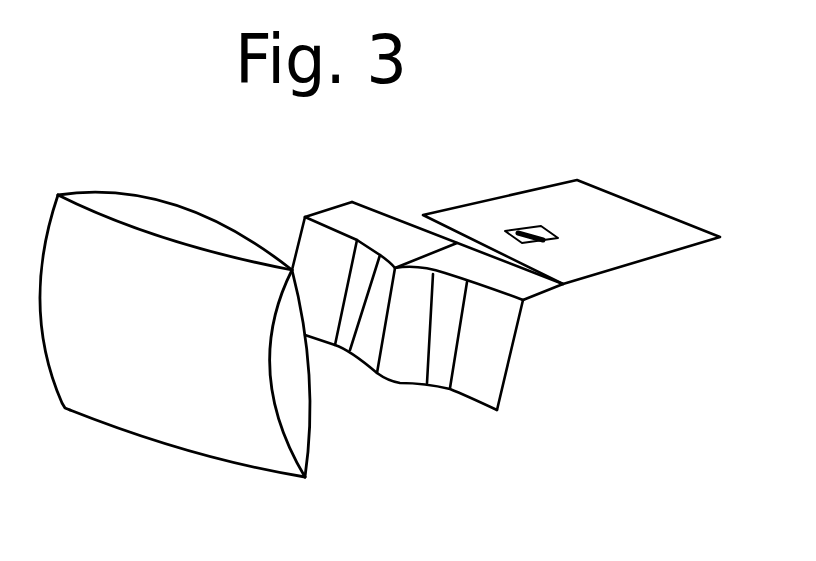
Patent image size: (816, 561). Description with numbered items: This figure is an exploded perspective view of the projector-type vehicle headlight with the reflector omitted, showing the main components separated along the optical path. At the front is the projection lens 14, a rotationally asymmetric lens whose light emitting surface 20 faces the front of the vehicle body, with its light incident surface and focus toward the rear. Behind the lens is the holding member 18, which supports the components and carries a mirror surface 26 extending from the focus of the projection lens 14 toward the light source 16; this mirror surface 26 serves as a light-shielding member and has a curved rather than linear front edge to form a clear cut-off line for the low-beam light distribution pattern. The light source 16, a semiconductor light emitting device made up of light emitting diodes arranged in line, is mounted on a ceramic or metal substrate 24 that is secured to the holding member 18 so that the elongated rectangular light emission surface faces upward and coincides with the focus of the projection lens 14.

The projection lens 14 is at (127, 208).
The light emitting surface 20 is at (190, 430).
The holding member 18 is at (405, 362).
The mirror surface 26 is at (409, 238).
The light source 16 is at (537, 230).
The substrate 24 is at (557, 237).